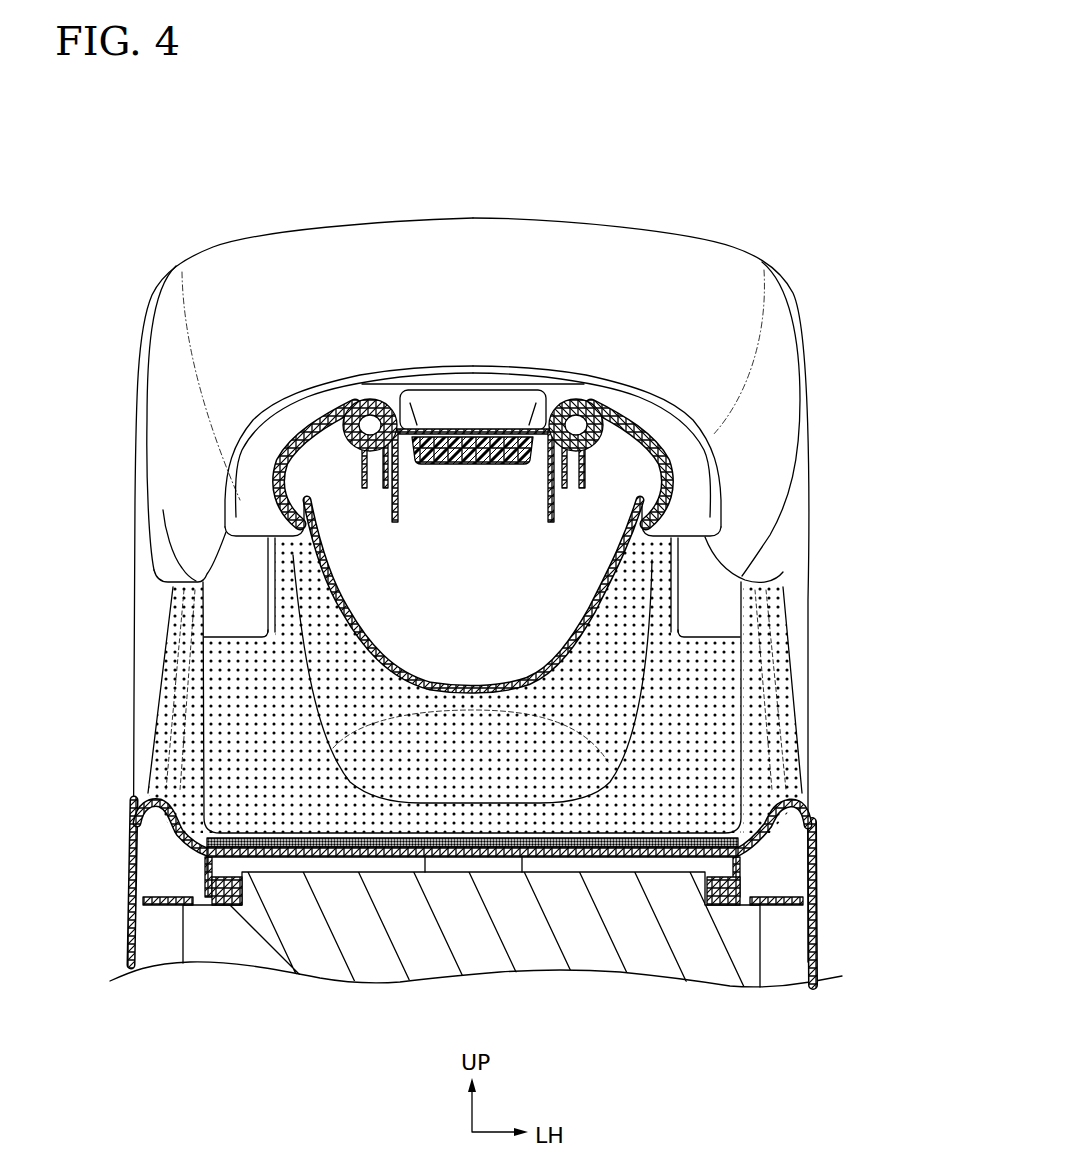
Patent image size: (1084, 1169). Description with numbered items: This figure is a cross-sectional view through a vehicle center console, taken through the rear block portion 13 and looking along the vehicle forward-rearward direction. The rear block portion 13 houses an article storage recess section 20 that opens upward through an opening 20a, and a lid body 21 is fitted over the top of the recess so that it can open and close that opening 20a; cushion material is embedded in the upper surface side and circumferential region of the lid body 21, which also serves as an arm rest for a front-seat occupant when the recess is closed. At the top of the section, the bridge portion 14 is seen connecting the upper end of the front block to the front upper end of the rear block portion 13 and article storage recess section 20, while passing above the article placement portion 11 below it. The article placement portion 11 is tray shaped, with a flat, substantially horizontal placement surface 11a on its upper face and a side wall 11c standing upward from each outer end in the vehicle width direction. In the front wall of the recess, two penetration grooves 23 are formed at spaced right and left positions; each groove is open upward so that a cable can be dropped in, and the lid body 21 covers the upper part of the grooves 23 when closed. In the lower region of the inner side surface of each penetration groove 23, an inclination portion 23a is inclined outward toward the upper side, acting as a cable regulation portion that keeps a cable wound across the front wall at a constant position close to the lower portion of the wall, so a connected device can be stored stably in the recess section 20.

The article placement portion 11 is at (826, 860).
The placement surface 11a is at (662, 838).
The side wall 11c is at (790, 801).
The rear block portion 13 is at (818, 347).
The bridge portion 14 is at (441, 414).
The article storage recess section 20 is at (800, 620).
The opening 20a is at (762, 582).
The lid body 21 is at (664, 228).
The penetration groove 23 is at (235, 630).
The inclination portion 23a is at (268, 620).